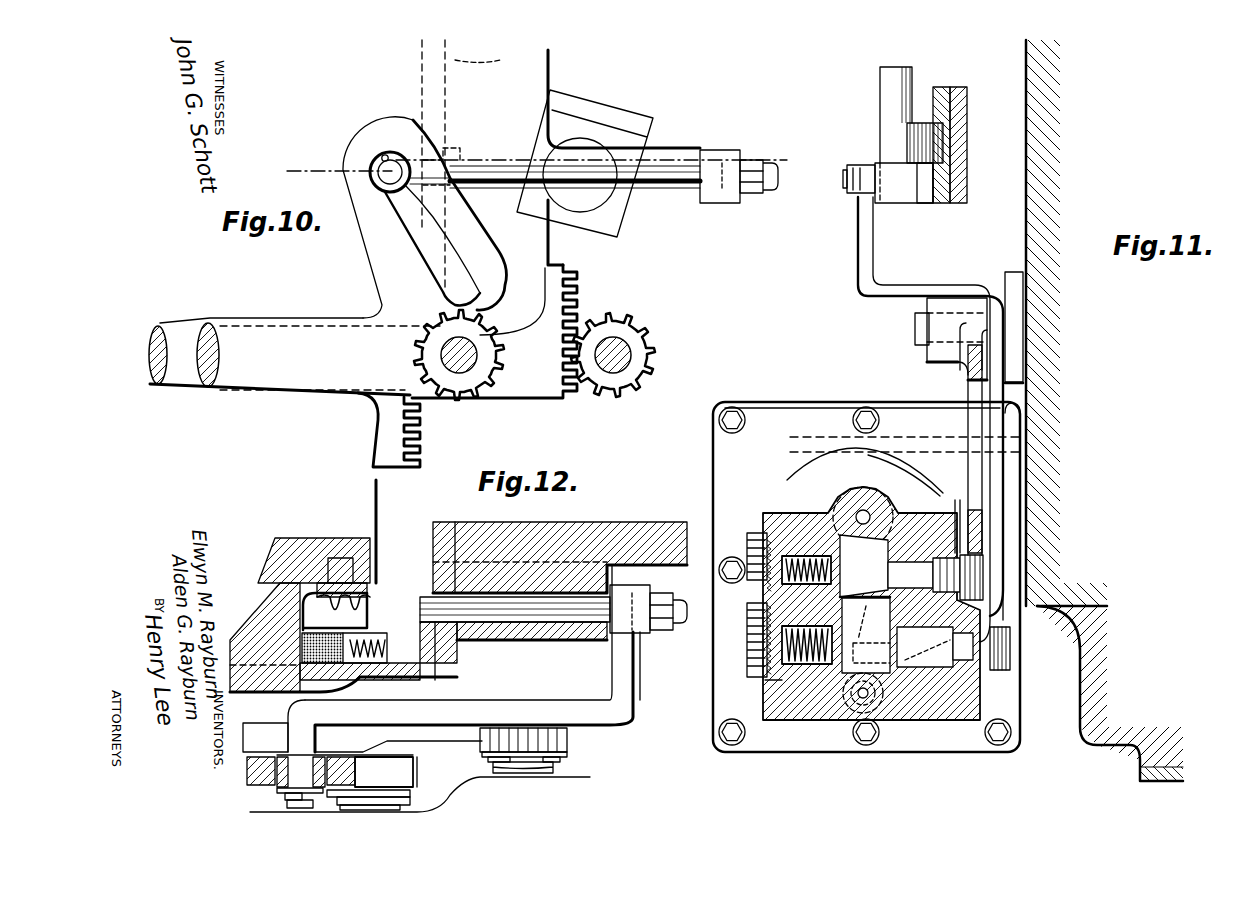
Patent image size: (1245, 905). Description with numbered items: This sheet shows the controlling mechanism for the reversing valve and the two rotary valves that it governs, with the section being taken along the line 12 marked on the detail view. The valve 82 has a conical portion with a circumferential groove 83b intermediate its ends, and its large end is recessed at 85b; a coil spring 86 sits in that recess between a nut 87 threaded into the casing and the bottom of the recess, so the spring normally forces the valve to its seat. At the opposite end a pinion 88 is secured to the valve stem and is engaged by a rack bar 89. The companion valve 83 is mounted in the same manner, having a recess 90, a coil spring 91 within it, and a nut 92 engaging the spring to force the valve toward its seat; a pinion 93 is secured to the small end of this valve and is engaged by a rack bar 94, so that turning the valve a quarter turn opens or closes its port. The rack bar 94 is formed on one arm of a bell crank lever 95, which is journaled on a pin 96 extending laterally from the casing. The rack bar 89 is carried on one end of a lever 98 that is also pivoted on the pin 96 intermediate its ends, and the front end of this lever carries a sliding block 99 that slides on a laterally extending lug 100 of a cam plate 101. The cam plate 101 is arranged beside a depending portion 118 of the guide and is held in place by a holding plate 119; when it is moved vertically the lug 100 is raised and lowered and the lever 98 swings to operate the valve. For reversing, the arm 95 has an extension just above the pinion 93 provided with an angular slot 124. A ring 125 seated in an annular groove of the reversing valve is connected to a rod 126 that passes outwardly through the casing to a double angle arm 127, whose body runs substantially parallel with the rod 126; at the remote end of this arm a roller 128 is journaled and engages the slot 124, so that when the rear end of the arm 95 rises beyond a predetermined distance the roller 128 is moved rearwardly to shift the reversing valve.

In FIG. 10, the section line 12 is at (549, 157).
In FIG. 10, the valve 82 is at (628, 345).
In FIG. 11, the valve 82 is at (935, 647).
In FIG. 11, the valve 83 is at (900, 566).
In FIG. 11, the groove 83b is at (866, 635).
In FIG. 11, the recess 85b is at (770, 680).
In FIG. 11, the coil spring 86 is at (783, 640).
In FIG. 11, the nut 87 is at (768, 656).
In FIG. 10, the pinion 88 is at (620, 384).
In FIG. 11, the pinion 88 is at (1012, 654).
In FIG. 10, the rack bar 89 is at (566, 378).
In FIG. 11, the rack bar 89 is at (1010, 610).
In FIG. 11, the recess 90 is at (800, 540).
In FIG. 11, the coil spring 91 is at (823, 547).
In FIG. 11, the nut 92 is at (752, 535).
In FIG. 10, the pinion 93 is at (468, 380).
In FIG. 11, the pinion 93 is at (1010, 590).
In FIG. 10, the rack bar 94 is at (413, 418).
In FIG. 11, the rack bar 94 is at (983, 540).
In FIG. 10, the bell crank lever 95 is at (330, 380).
In FIG. 11, the bell crank lever 95 is at (968, 381).
In FIG. 11, the pin 96 is at (915, 333).
In FIG. 10, the lever 98 is at (170, 375).
In FIG. 11, the lever 98 is at (858, 272).
In FIG. 11, the sliding block 99 is at (888, 196).
In FIG. 11, the lug 100 is at (887, 70).
In FIG. 11, the cam plate 101 is at (920, 138).
In FIG. 11, the depending portion 118 is at (935, 87).
In FIG. 11, the holding plate 119 is at (967, 165).
In FIG. 10, the angular slot 124 is at (500, 192).
In FIG. 12, the angular slot 124 is at (405, 748).
In FIG. 12, the ring 125 is at (376, 562).
In FIG. 10, the rod 126 is at (766, 195).
In FIG. 12, the rod 126 is at (520, 612).
In FIG. 10, the double angle arm 127 is at (690, 188).
In FIG. 12, the double angle arm 127 is at (563, 705).
In FIG. 10, the roller 128 is at (370, 168).
In FIG. 12, the roller 128 is at (273, 785).